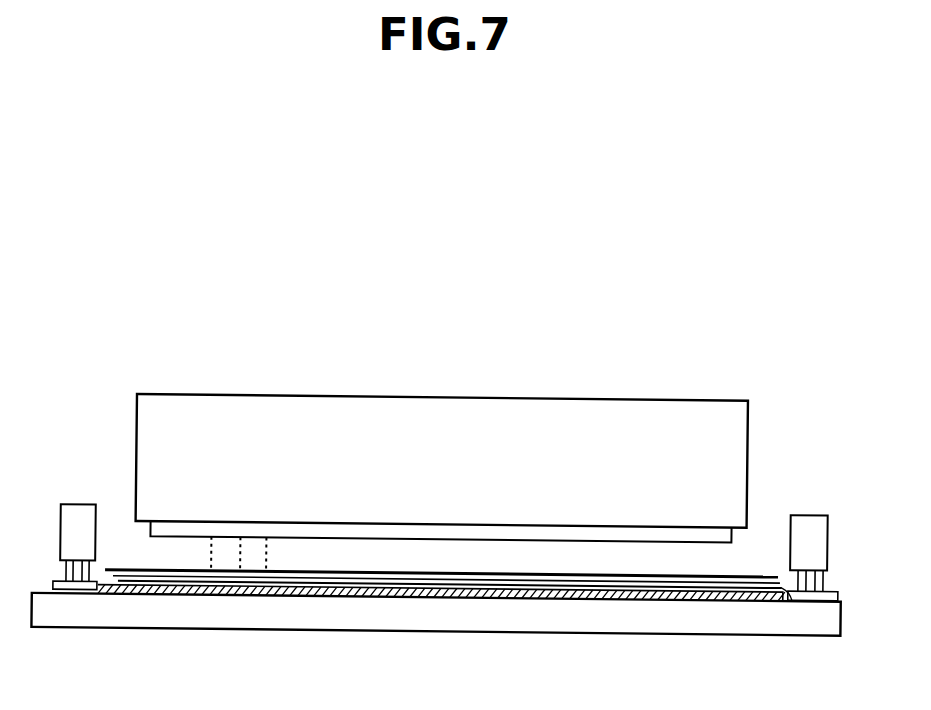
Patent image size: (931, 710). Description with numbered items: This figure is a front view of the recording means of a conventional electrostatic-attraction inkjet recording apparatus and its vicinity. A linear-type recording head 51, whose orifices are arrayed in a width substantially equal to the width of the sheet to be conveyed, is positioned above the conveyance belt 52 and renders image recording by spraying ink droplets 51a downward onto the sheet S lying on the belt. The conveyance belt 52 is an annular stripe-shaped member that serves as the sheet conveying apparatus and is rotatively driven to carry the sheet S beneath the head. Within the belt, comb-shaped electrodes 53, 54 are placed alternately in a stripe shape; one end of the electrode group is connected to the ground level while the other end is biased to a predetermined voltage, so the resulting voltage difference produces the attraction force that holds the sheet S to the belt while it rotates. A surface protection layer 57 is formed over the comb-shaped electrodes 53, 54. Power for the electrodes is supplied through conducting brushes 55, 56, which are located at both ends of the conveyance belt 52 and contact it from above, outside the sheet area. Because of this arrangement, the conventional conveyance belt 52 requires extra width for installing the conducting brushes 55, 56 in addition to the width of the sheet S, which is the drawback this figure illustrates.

The recording head 51 is at (402, 405).
The ink droplets 51a is at (267, 548).
The sheet S is at (538, 575).
The surface protection layer 57 is at (625, 578).
The comb-shaped electrode 53 is at (483, 598).
The conveyance belt 52 is at (803, 632).
The conducting brush 55 is at (78, 510).
The conducting brush 56 is at (812, 520).
The comb-shaped electrode 54 is at (838, 594).